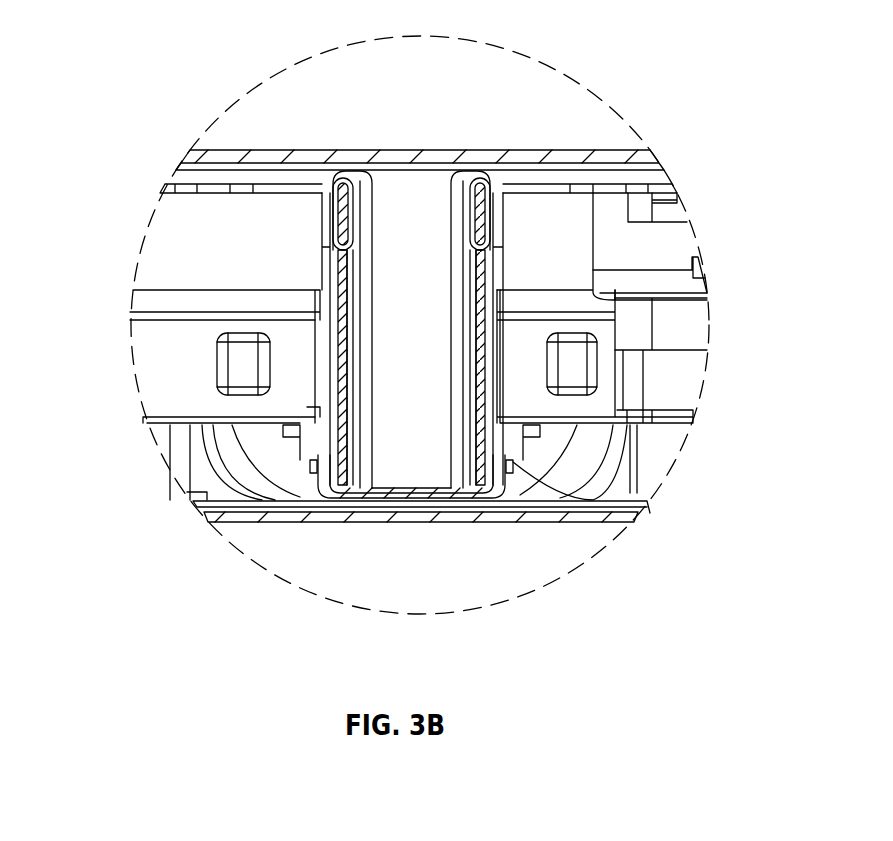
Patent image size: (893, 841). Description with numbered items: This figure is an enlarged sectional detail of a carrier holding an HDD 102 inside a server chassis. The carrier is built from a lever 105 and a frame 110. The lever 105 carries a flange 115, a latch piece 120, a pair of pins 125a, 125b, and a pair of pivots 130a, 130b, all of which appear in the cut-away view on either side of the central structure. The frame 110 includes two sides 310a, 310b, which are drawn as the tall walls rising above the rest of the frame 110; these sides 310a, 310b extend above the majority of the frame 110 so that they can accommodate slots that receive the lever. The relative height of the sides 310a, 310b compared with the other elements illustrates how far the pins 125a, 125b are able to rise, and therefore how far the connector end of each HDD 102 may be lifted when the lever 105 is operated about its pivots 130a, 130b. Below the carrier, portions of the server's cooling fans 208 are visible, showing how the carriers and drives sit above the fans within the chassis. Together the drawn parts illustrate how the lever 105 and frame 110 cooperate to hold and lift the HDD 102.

The HDD 102 is at (178, 220).
The lever 105 is at (328, 193).
The frame 110 is at (160, 395).
The flange 115 is at (240, 188).
The latch piece 120 is at (667, 255).
The pin 125a is at (320, 440).
The pin 125b is at (520, 443).
The pivot 130a is at (327, 380).
The pivot 130b is at (490, 377).
The cooling fan 208 is at (202, 460).
The side 310a is at (322, 278).
The side 310b is at (568, 257).